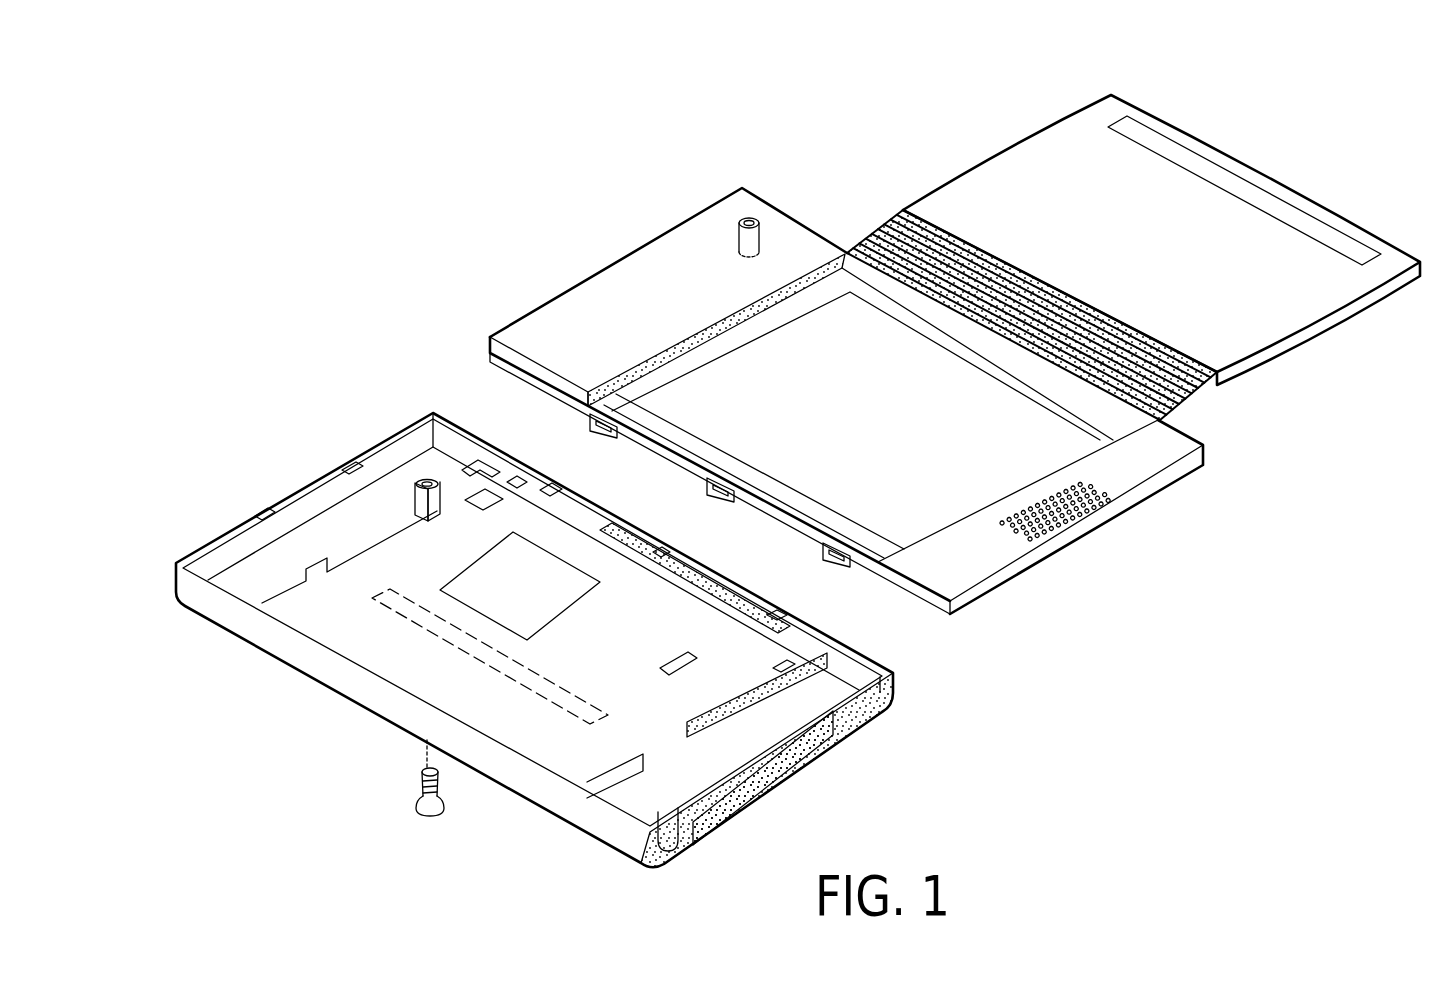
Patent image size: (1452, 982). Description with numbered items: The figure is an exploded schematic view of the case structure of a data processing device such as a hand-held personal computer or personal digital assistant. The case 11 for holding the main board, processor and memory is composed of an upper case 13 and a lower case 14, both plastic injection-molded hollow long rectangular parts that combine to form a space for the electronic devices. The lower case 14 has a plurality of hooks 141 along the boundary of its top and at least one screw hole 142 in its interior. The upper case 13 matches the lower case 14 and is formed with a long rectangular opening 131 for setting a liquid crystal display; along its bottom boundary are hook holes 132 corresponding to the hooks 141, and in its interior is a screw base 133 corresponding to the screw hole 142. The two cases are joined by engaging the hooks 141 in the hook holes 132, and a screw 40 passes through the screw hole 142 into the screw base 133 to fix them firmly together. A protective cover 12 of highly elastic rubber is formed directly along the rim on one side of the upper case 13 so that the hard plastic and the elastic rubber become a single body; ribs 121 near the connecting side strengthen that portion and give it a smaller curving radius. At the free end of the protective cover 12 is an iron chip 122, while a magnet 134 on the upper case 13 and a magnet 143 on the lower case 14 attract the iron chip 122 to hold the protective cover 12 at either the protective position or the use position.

The case 11 is at (590, 212).
The protective cover 12 is at (1261, 294).
The ribs 121 is at (1180, 395).
The iron chip 122 is at (1229, 166).
The upper case 13 is at (1006, 563).
The long rectangular opening 131 is at (806, 354).
The hook holes 132 is at (592, 416).
The screw base 133 is at (742, 222).
The magnet 134 is at (865, 547).
The lower case 14 is at (870, 730).
The hooks 141 is at (267, 515).
The screw hole 142 is at (423, 477).
The magnet 143 is at (433, 635).
The screw 40 is at (415, 783).